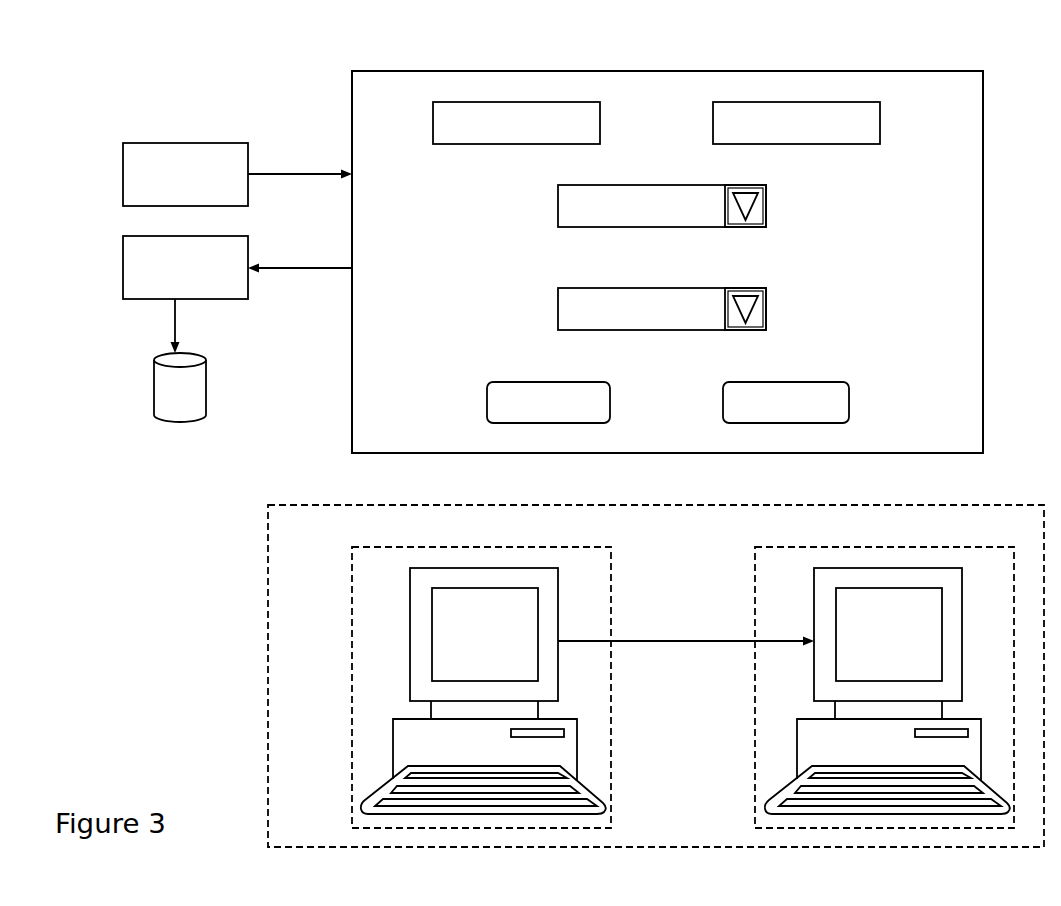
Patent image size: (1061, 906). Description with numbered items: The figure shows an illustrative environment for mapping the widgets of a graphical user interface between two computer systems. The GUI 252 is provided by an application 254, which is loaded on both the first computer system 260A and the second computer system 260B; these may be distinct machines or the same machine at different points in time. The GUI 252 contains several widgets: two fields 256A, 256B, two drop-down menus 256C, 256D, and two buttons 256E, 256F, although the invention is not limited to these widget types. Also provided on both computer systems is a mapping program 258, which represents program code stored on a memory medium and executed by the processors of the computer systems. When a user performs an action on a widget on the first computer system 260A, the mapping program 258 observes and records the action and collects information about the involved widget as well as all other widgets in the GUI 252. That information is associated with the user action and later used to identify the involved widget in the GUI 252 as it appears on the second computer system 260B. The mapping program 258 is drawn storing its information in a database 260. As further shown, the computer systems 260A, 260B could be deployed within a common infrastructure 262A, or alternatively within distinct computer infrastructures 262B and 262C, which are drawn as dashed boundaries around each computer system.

The GUI 252 is at (372, 71).
The application 254 is at (123, 174).
The field 256A is at (600, 122).
The field 256B is at (880, 122).
The drop-down menu 256C is at (558, 207).
The drop-down menu 256D is at (558, 309).
The button 256E is at (487, 403).
The button 256F is at (723, 403).
The mapping program 258 is at (123, 268).
The database 260 is at (154, 382).
The first computer system 260A is at (485, 568).
The second computer system 260B is at (887, 664).
The common infrastructure 262A is at (268, 516).
The distinct computer infrastructure 262B is at (352, 578).
The distinct computer infrastructure 262C is at (755, 568).